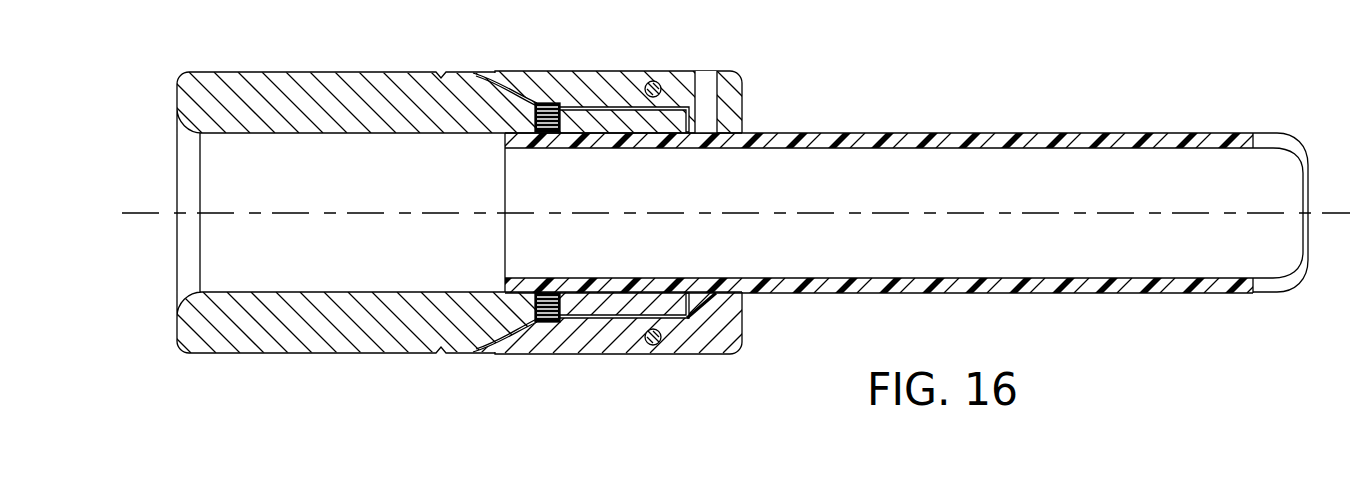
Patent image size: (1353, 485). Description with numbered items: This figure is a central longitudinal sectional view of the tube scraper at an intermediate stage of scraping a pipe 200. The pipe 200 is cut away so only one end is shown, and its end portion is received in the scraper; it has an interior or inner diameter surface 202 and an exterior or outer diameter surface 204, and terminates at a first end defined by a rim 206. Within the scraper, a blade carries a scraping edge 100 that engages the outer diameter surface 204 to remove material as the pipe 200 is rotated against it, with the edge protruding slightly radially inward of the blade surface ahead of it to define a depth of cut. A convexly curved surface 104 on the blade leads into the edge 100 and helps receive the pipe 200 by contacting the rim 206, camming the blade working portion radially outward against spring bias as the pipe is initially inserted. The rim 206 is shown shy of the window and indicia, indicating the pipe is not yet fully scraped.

The edge 100 is at (894, 237).
The convexly curved surface 104 is at (738, 131).
The pipe 200 is at (721, 216).
The inner diameter surface 202 is at (883, 278).
The outer diameter surface 204 is at (843, 294).
The rim 206 is at (505, 173).